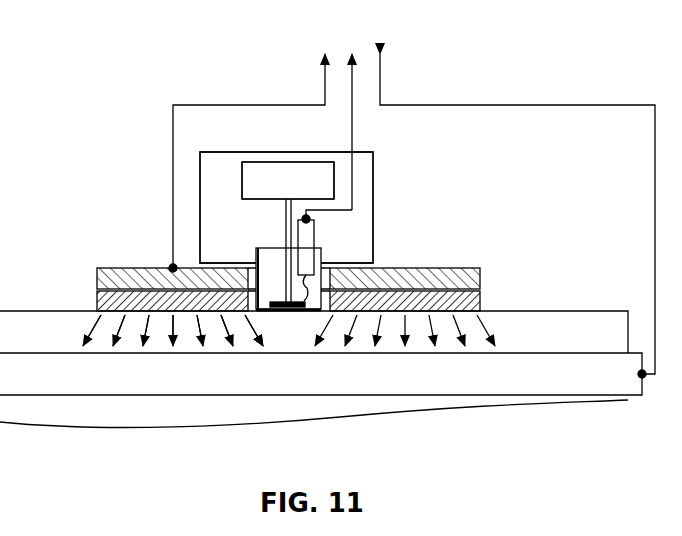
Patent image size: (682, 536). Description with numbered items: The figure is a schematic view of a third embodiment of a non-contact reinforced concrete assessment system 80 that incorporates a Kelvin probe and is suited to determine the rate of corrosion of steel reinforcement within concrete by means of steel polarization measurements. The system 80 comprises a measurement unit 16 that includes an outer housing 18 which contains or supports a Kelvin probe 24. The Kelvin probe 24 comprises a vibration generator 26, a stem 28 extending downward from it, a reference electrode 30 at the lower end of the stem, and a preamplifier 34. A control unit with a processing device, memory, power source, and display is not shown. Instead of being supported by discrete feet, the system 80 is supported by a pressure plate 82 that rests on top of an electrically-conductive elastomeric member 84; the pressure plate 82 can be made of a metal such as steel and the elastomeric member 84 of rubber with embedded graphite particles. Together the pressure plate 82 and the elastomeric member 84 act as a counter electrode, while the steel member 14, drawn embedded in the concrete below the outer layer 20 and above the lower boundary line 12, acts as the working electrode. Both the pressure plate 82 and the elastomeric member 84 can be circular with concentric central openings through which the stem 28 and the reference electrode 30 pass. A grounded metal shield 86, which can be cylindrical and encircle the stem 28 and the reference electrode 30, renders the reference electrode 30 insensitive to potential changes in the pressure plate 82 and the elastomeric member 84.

The system 80 is at (54, 121).
The skin surface 12 is at (80, 421).
The steel member 14 is at (321, 374).
The measurement unit 16 is at (432, 189).
The outer housing 18 is at (373, 175).
The top layer 20 is at (572, 311).
The Kelvin probe 24 is at (221, 165).
The vibration generator 26 is at (288, 180).
The stem 28 is at (286, 222).
The reference electrode 30 is at (288, 308).
The preamplifier 34 is at (307, 233).
The pressure plate 82 is at (420, 268).
The electrically-conductive elastomeric member 84 is at (483, 298).
The grounded metal shield 86 is at (256, 262).